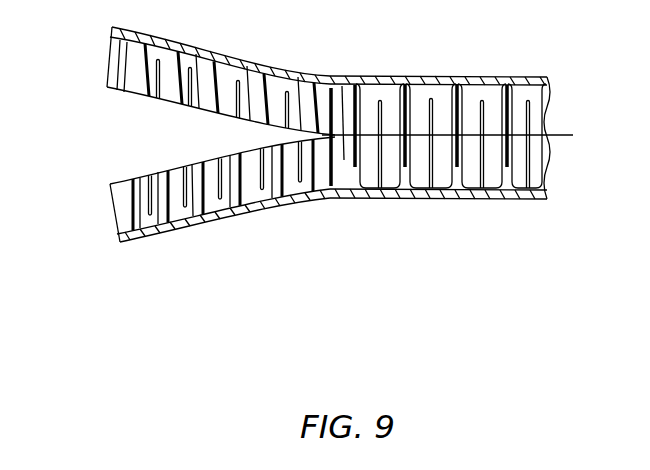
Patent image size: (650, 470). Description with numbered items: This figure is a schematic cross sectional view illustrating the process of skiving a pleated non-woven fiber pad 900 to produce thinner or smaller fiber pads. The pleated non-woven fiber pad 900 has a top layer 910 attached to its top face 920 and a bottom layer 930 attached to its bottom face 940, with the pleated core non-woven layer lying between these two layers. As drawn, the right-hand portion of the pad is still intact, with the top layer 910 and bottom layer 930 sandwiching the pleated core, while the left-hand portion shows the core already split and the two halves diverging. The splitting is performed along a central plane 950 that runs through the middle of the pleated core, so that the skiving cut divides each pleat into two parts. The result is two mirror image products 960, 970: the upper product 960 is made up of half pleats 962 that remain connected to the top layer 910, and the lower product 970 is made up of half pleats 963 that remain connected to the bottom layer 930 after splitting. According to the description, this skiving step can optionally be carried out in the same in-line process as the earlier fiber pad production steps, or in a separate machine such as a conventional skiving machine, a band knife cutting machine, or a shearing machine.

The pleated non-woven fiber pad 900 is at (480, 70).
The top layer 910 is at (527, 78).
The top face 920 is at (264, 72).
The bottom layer 930 is at (523, 199).
The bottom face 940 is at (250, 203).
The central plane 950 is at (560, 138).
The mirror image product 960 is at (107, 57).
The half pleats 962 is at (141, 97).
The half pleats 963 is at (175, 169).
The mirror image product 970 is at (115, 212).